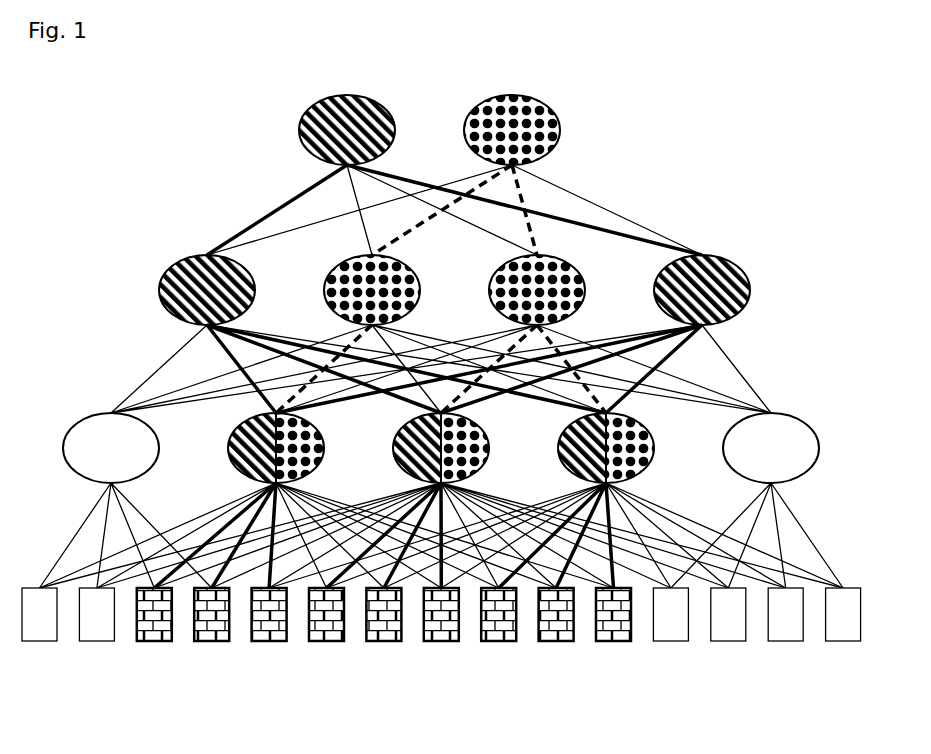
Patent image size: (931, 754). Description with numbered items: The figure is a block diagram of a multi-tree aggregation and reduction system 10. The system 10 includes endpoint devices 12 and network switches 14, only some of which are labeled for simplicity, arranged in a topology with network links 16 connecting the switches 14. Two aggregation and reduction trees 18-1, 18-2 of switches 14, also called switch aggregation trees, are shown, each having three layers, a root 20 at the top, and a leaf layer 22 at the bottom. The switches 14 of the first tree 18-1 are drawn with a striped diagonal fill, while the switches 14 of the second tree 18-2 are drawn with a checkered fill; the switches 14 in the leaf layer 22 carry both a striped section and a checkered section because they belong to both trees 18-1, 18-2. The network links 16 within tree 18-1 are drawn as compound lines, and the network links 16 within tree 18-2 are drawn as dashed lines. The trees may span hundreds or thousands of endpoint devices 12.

The multi-tree aggregation and reduction system 10 is at (808, 115).
The endpoint devices 12 is at (154, 641).
The network switches 14 is at (441, 448).
The network links 16 is at (310, 190).
The aggregation and reduction tree 18-1 is at (315, 105).
The aggregation and reduction tree 18-2 is at (580, 78).
The root 20 is at (478, 103).
The leaf layer 22 is at (206, 425).